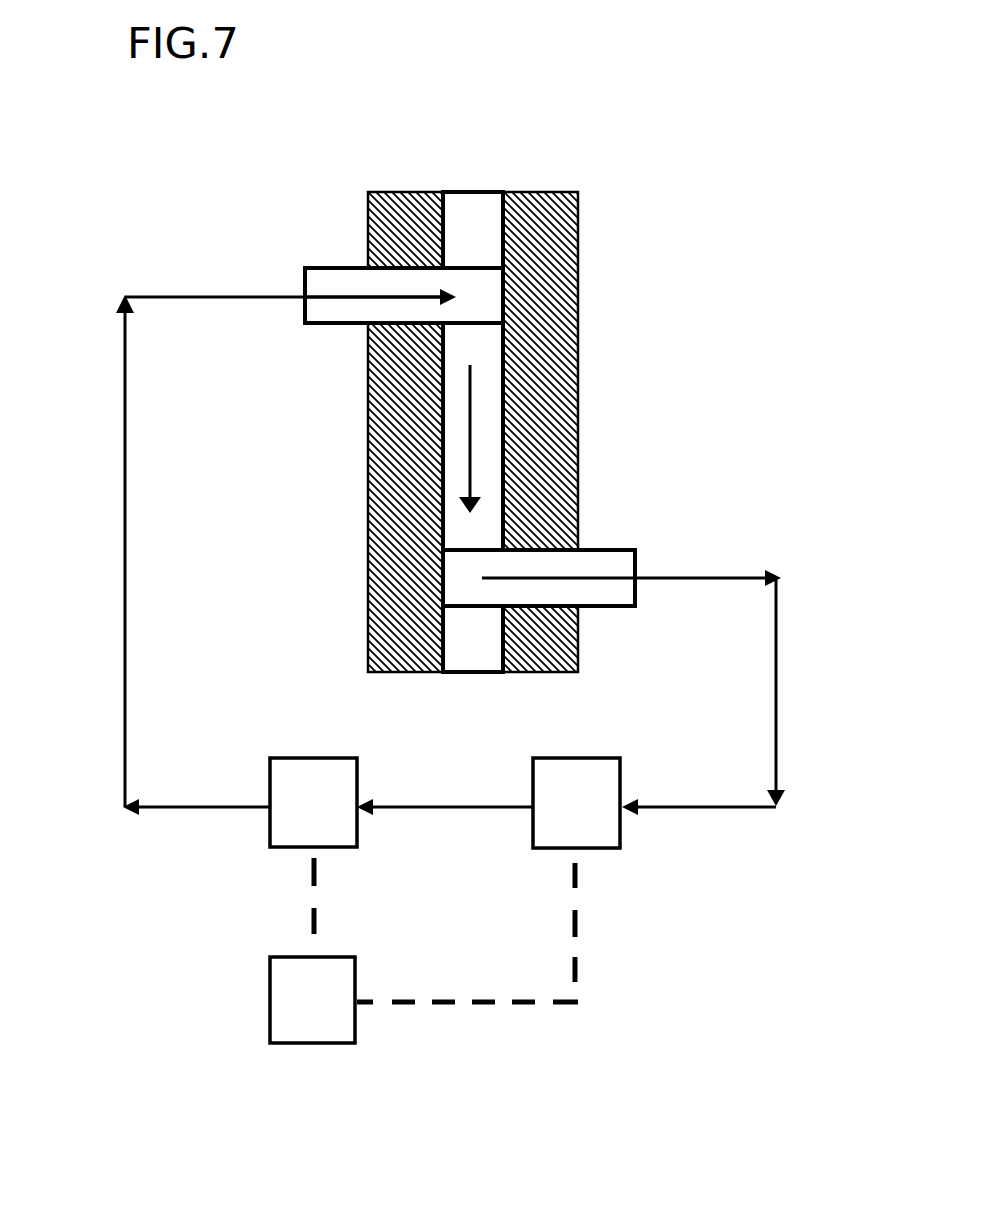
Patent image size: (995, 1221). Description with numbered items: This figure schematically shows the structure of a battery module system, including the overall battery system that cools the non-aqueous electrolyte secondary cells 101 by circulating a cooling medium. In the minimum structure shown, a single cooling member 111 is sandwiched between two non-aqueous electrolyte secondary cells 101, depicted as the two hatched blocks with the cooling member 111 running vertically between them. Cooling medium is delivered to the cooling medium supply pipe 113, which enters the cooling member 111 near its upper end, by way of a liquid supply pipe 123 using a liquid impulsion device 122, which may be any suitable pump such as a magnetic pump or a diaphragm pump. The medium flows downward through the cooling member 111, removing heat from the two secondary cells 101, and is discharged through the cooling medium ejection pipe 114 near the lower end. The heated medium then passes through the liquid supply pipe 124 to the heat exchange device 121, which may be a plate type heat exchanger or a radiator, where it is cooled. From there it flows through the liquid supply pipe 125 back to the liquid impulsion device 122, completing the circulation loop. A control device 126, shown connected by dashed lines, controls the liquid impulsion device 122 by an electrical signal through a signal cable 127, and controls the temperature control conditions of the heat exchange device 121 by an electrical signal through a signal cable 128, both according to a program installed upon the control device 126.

The non-aqueous electrolyte secondary cell 101 is at (580, 212).
The cooling member 111 is at (477, 190).
The cooling medium supply pipe 113 is at (327, 268).
The cooling medium ejection pipe 114 is at (635, 543).
The heat exchange device 121 is at (576, 803).
The liquid impulsion device 122 is at (313, 802).
The liquid supply pipe 123 is at (125, 553).
The liquid supply pipe 124 is at (776, 690).
The liquid supply pipe 125 is at (452, 808).
The control device 126 is at (312, 1000).
The signal cable 127 is at (314, 905).
The signal cable 128 is at (575, 915).